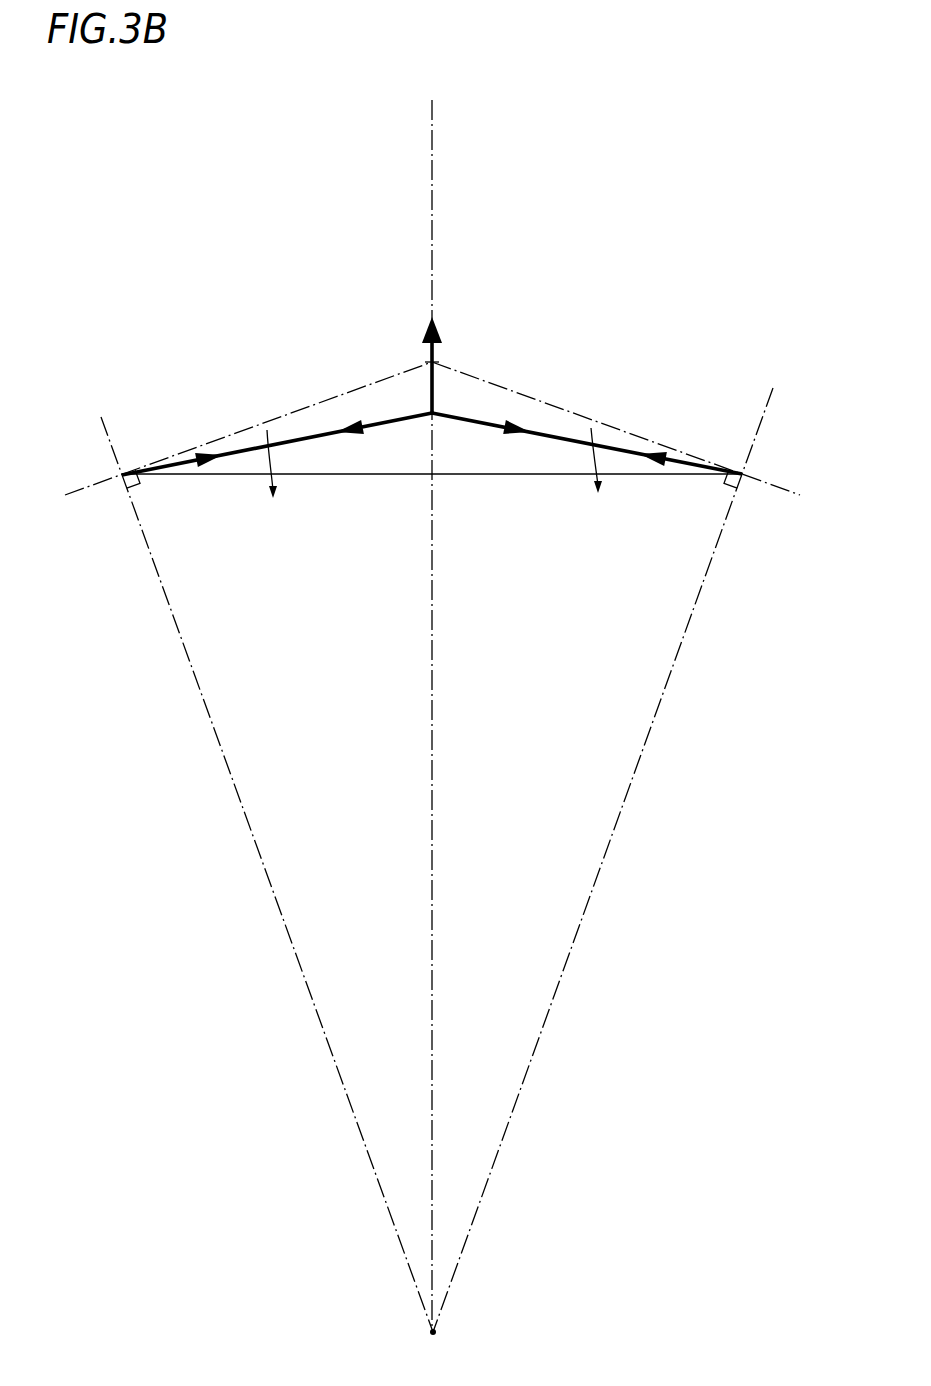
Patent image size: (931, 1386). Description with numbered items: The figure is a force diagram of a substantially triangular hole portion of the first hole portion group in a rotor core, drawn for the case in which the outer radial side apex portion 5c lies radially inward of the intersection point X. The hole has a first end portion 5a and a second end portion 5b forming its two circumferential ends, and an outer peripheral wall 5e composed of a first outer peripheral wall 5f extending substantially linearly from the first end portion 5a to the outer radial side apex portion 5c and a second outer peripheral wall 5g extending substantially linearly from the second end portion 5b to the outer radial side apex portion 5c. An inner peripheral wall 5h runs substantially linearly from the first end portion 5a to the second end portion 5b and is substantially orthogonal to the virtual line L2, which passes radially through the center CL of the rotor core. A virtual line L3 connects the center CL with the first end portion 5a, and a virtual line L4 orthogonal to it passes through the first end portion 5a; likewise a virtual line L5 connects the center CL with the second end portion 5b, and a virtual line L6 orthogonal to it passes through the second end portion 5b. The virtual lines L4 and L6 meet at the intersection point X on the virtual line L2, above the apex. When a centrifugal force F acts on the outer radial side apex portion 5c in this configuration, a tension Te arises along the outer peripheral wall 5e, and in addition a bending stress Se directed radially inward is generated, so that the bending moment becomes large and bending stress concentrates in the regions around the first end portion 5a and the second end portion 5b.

The virtual line L2 is at (432, 699).
The virtual line L3 is at (258, 860).
The virtual line L4 is at (231, 438).
The virtual line L5 is at (610, 845).
The virtual line L6 is at (636, 438).
The center CL is at (448, 1335).
The intersection point X is at (436, 360).
The centrifugal force F is at (430, 358).
The tension Te is at (180, 462).
The bending stress Se is at (437, 479).
The first end portion 5a is at (122, 477).
The second end portion 5b is at (738, 468).
The outer radial side apex portion 5c is at (434, 416).
The outer peripheral wall 5e is at (432, 401).
The first outer peripheral wall 5f is at (318, 430).
The second outer peripheral wall 5g is at (566, 440).
The inner peripheral wall 5h is at (458, 474).